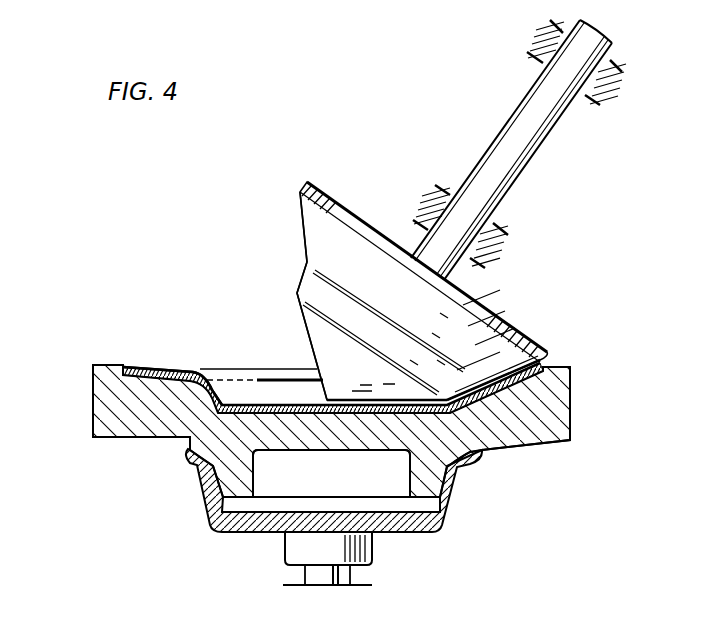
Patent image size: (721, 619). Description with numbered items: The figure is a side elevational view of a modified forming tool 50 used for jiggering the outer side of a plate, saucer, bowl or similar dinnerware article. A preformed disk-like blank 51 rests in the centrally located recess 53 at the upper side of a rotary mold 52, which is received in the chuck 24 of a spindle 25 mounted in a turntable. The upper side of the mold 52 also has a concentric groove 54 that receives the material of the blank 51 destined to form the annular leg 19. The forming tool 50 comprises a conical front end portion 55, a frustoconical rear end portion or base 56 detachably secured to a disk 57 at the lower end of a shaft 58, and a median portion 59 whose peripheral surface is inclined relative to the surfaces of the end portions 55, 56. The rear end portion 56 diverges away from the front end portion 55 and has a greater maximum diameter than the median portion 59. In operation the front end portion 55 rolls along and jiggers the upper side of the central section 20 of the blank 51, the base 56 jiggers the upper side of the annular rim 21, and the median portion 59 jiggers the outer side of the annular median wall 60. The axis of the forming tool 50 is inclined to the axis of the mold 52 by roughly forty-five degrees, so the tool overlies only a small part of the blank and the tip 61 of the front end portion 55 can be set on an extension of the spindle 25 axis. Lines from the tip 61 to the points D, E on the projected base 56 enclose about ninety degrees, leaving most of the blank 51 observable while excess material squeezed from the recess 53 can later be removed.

The annular leg 19 is at (205, 378).
The central section 20 is at (378, 393).
The annular rim 21 is at (165, 368).
The chuck 24 is at (203, 502).
The spindle 25 is at (313, 575).
The forming tool 50 is at (291, 277).
The blank 51 is at (243, 398).
The rotary mold 52 is at (88, 405).
The recess 53 is at (367, 417).
The concentric groove 54 is at (488, 447).
The conical front end portion 55 is at (317, 323).
The frustoconical rear end portion 56 is at (467, 333).
The disk 57 is at (357, 231).
The shaft 58 is at (513, 157).
The median portion 59 is at (312, 287).
The annular median wall 60 is at (570, 407).
The tip 61 is at (336, 392).
The point D is at (300, 192).
The point E is at (547, 363).